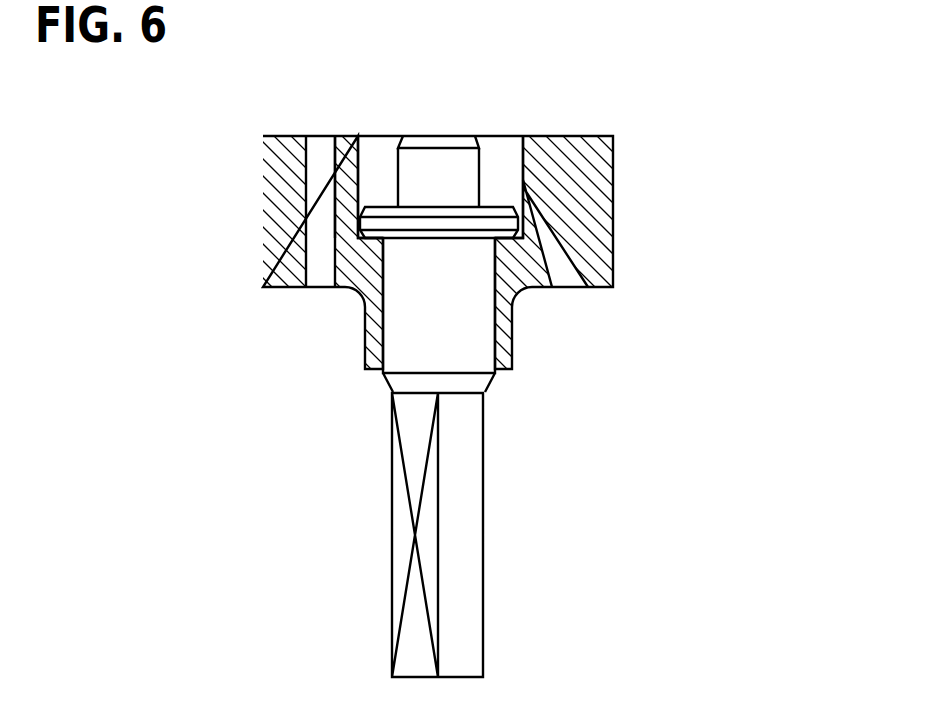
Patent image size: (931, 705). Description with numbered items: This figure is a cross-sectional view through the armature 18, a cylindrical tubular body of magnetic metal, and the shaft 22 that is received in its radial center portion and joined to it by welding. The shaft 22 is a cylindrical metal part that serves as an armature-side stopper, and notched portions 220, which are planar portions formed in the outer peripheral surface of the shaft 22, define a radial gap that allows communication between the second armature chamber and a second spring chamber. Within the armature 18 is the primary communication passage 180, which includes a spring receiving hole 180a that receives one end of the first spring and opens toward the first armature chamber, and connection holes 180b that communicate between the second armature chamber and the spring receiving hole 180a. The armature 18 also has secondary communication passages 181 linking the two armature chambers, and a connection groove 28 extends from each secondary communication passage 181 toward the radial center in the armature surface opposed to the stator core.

The armature 18 is at (278, 198).
The secondary communication passage 181 is at (317, 243).
The connection groove 28 is at (338, 136).
The primary communication passage 180 is at (663, 211).
The spring receiving hole 180a is at (503, 168).
The connection hole 180b is at (545, 238).
The shaft 22 is at (393, 352).
The notched portion 220 is at (403, 520).